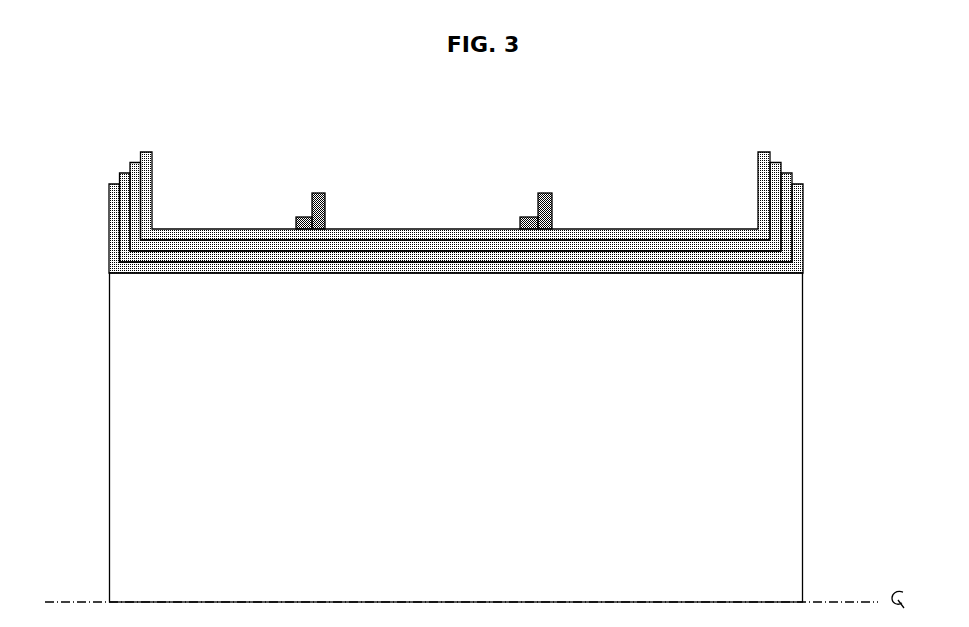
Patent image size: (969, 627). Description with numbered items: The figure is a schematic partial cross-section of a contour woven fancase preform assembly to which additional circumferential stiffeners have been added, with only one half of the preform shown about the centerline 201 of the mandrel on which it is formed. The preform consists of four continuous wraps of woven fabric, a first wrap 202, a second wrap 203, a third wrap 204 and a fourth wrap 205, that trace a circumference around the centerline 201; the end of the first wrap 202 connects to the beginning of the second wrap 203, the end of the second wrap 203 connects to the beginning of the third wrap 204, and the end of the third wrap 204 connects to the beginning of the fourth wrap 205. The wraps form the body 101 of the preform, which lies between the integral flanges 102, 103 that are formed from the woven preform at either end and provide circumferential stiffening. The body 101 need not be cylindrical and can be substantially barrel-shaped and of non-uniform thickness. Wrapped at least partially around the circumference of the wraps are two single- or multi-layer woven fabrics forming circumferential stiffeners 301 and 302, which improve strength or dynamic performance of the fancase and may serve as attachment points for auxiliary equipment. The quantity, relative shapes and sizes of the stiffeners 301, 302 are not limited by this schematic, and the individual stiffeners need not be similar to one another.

The body 101 is at (396, 287).
The integral flange 102 is at (820, 223).
The integral flange 103 is at (97, 228).
The centerline 201 is at (886, 583).
The first wrap 202 is at (518, 267).
The second wrap 203 is at (576, 255).
The third wrap 204 is at (660, 243).
The fourth wrap 205 is at (425, 232).
The circumferential stiffener 301 is at (562, 205).
The circumferential stiffener 302 is at (336, 199).